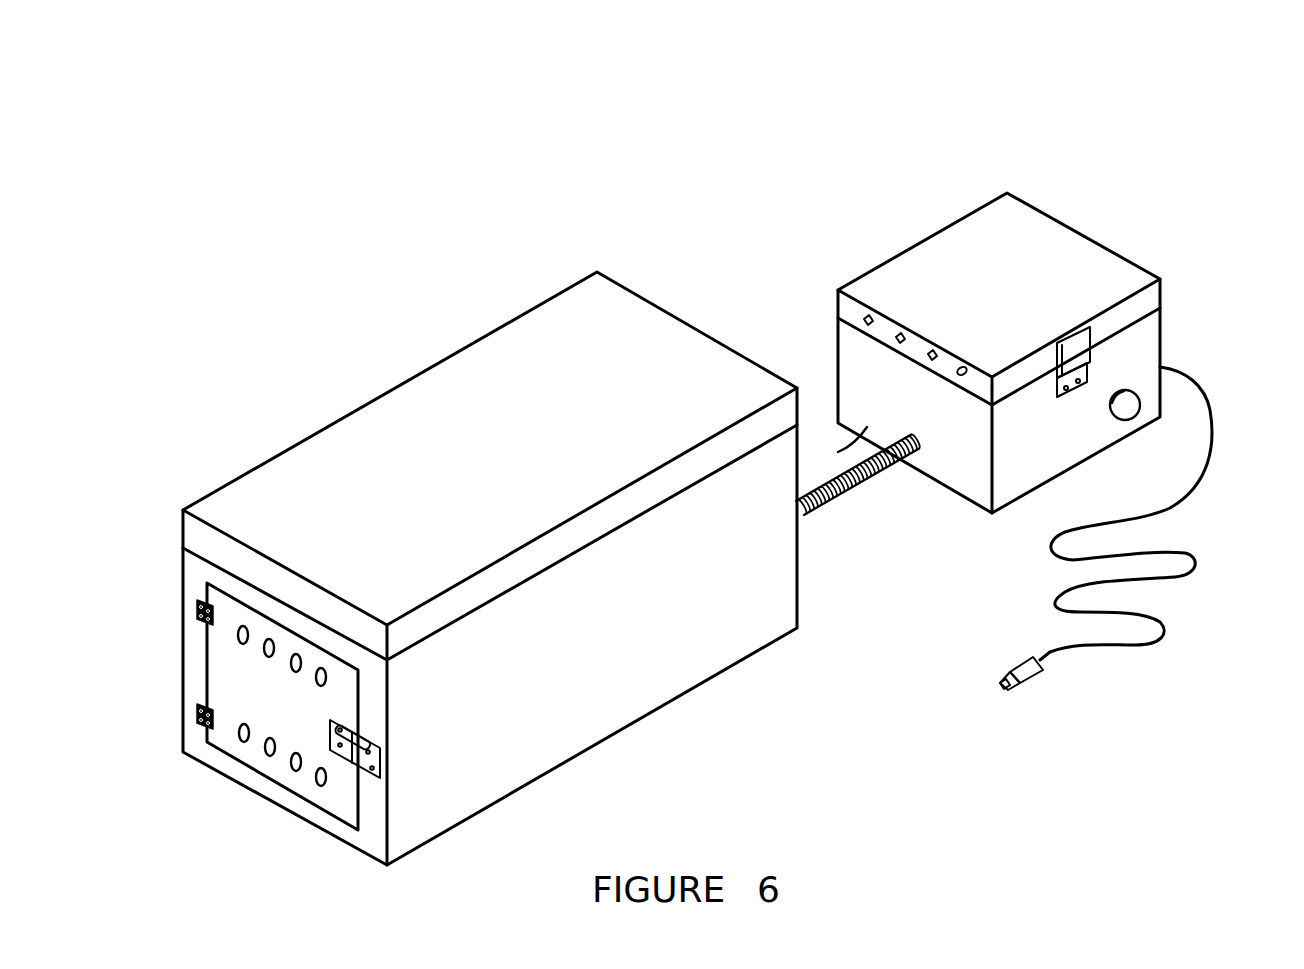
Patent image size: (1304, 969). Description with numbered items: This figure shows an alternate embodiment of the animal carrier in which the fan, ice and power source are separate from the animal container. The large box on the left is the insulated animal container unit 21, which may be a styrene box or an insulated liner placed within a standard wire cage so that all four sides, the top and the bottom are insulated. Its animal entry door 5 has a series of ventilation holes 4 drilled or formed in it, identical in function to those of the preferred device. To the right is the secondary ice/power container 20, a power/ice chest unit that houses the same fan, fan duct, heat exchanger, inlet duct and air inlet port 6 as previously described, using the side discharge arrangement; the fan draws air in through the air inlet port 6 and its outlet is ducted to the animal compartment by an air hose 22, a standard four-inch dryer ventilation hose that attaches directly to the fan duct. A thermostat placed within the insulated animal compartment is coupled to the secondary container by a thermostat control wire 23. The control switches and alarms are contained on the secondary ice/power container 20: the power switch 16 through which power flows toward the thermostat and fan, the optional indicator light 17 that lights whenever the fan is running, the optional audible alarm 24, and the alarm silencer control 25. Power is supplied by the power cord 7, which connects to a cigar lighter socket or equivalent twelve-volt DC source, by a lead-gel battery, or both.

The insulated animal container unit 21 is at (86, 490).
The secondary ice/power container 20 is at (937, 72).
The animal entry door 5 is at (235, 685).
The ventilation holes 4 is at (240, 743).
The power switch 16 is at (869, 315).
The indicator light 17 is at (901, 333).
The alarm silencer control 25 is at (933, 350).
The audible alarm 24 is at (962, 367).
The air inlet port 6 is at (1128, 420).
The power cord 7 is at (1183, 577).
The air hose 22 is at (848, 487).
The thermostat control wire 23 is at (800, 460).